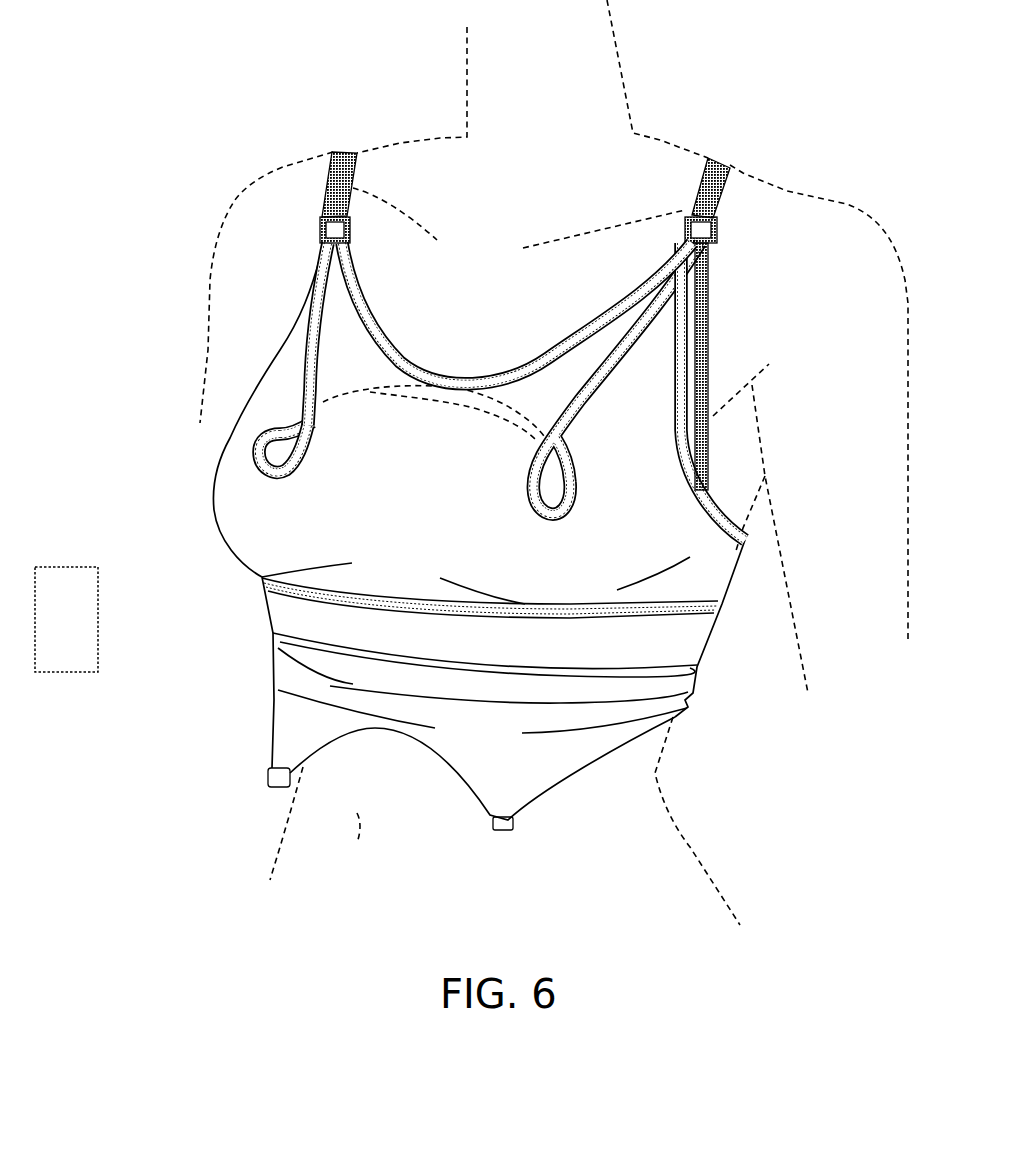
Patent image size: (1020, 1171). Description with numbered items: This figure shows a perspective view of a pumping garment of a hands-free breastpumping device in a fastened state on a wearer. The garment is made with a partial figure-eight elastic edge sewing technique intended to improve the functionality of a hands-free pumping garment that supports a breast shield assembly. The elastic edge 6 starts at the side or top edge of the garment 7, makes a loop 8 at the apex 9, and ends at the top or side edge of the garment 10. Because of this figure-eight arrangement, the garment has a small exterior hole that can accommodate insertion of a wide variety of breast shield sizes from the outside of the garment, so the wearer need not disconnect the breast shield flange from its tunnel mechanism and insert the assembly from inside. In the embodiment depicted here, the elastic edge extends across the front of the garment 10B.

The elastic edge 6 is at (291, 373).
The side or top edge of the garment 7 is at (306, 278).
The loop 8 is at (324, 423).
The apex 9 is at (266, 457).
The top or side edge of the garment 10 is at (396, 326).
The elastic edge extending across the front of the garment 10B is at (428, 409).